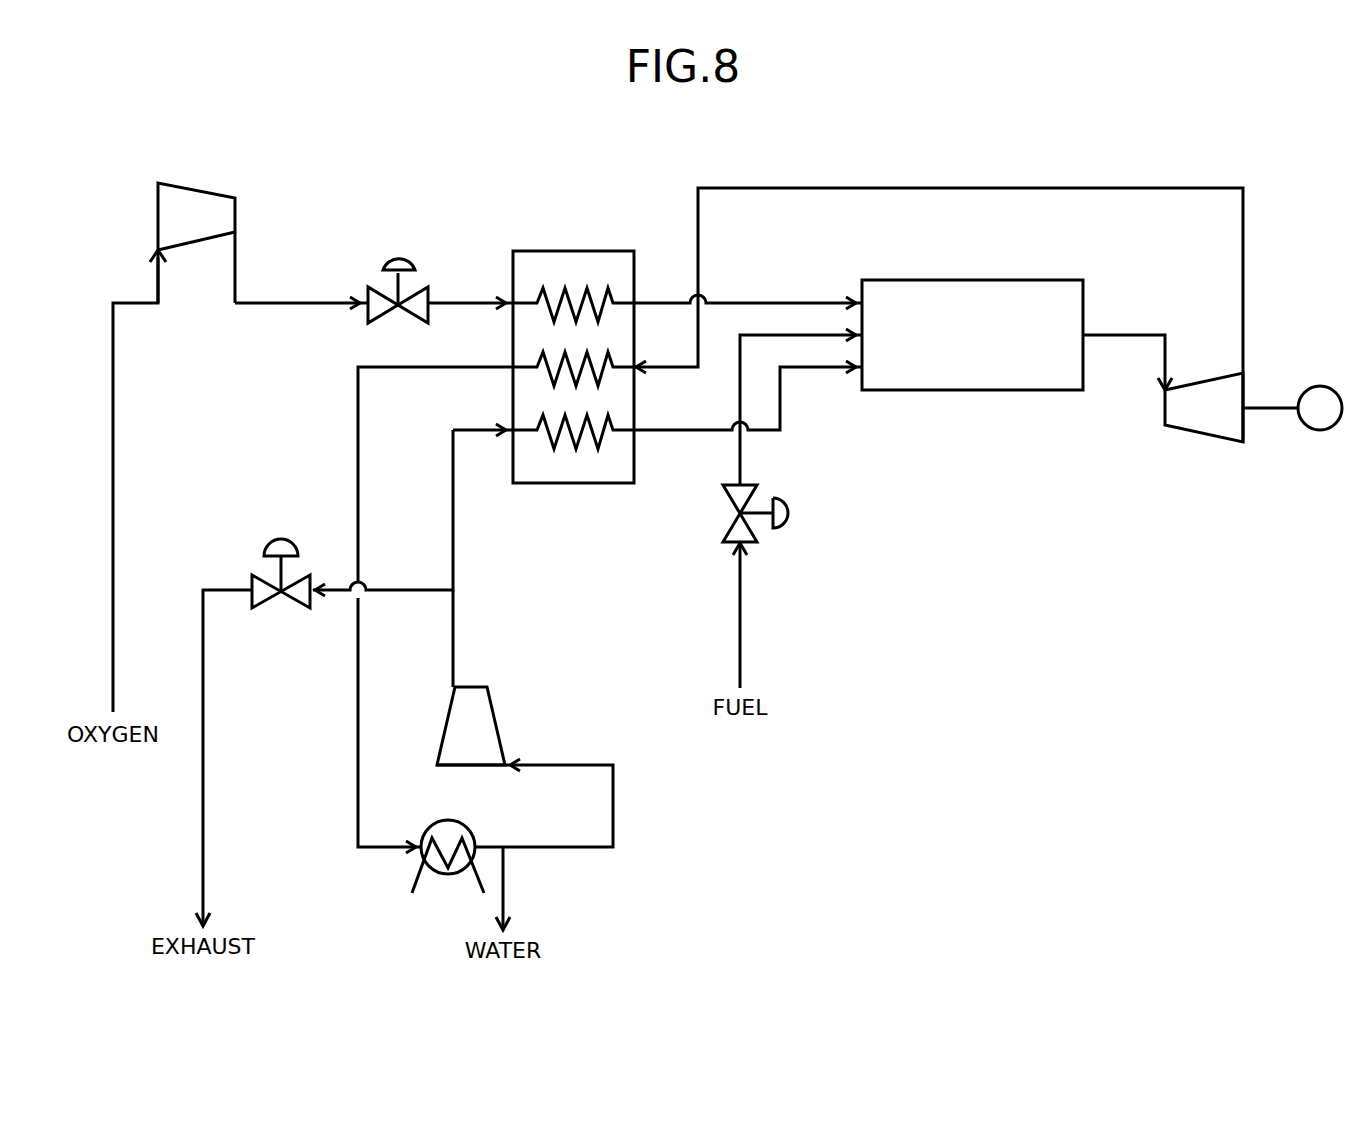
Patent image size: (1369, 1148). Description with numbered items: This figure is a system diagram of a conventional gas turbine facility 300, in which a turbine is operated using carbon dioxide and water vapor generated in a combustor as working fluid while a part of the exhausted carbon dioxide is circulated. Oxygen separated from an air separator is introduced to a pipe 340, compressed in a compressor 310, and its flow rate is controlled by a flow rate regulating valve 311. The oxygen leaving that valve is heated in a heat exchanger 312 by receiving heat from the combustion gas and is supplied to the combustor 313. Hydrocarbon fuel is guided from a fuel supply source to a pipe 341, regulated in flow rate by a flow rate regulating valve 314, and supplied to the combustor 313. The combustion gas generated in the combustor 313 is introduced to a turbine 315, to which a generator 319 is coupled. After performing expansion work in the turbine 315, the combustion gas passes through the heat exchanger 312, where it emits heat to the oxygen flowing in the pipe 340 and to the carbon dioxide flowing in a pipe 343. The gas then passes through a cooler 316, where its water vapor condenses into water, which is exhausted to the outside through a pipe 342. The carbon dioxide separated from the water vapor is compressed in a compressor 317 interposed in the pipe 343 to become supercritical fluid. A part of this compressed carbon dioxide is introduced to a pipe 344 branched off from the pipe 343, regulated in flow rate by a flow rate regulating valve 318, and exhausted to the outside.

The gas turbine facility 300 is at (594, 172).
The compressor 310 is at (198, 188).
The flow rate regulating valve 311 is at (378, 290).
The heat exchanger 312 is at (580, 250).
The combustor 313 is at (966, 279).
The flow rate regulating valve 314 is at (726, 521).
The turbine 315 is at (1204, 440).
The cooler 316 is at (448, 820).
The compressor 317 is at (498, 726).
The flow rate regulating valve 318 is at (260, 577).
The generator 319 is at (1326, 432).
The pipe 340 is at (110, 503).
The pipe 341 is at (738, 618).
The pipe 342 is at (505, 899).
The pipe 343 is at (452, 500).
The pipe 344 is at (410, 588).